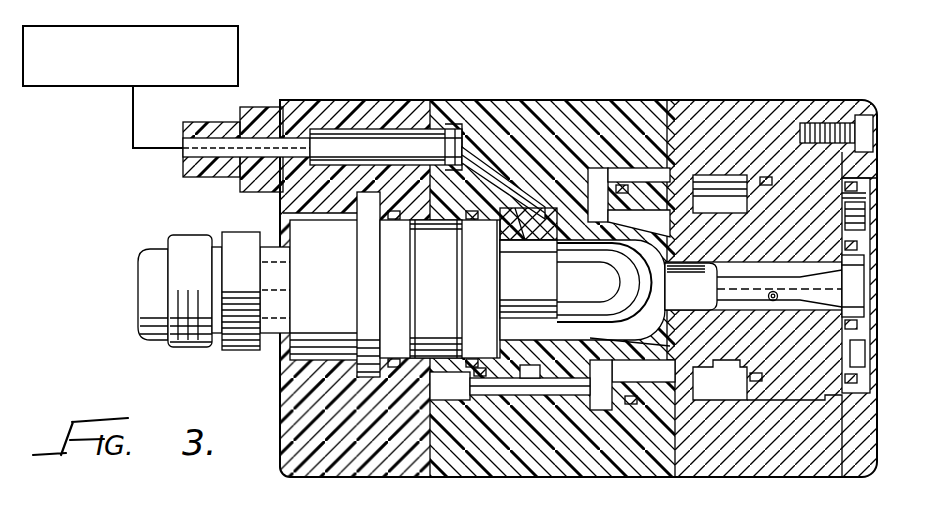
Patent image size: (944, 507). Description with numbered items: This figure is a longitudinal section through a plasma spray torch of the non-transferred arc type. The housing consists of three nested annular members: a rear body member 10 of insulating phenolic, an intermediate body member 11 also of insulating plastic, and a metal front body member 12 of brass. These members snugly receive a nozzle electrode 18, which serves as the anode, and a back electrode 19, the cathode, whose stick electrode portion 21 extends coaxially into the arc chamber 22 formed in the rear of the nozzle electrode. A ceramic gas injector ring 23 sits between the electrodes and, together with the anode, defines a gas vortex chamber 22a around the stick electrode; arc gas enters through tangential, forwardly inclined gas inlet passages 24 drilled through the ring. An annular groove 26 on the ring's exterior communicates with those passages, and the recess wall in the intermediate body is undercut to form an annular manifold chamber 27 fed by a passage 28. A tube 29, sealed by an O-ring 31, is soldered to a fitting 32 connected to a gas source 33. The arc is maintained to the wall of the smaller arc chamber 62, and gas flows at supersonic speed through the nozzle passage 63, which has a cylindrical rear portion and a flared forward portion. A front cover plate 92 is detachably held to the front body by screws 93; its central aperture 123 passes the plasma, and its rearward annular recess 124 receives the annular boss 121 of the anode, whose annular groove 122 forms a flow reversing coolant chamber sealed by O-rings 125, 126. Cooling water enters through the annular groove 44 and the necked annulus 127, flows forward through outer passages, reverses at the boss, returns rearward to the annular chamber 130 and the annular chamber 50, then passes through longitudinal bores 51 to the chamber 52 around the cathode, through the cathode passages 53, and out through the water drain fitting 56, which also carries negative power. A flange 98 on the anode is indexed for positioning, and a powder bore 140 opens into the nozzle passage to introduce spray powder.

The rear body member 10 is at (398, 100).
The intermediate body member 11 is at (580, 105).
The front body member 12 is at (725, 105).
The nozzle electrode 18 is at (805, 378).
The back electrode 19 is at (290, 345).
The stick electrode portion 21 is at (525, 288).
The arc chamber 22 is at (625, 255).
The gas vortex chamber 22a is at (505, 330).
The gas injector ring 23 is at (548, 207).
The gas inlet passages 24 is at (520, 238).
The annular groove 26 is at (512, 395).
The annular manifold chamber 27 is at (537, 382).
The passage 28 is at (488, 165).
The tube 29 is at (356, 129).
The O-ring 31 is at (447, 124).
The fitting 32 is at (210, 122).
The gas source 33 is at (238, 30).
The annular groove 44 is at (705, 178).
The annular chamber 50 is at (598, 410).
The longitudinal bores 51 is at (525, 395).
The chamber 52 is at (425, 383).
The piston flange 53 is at (453, 400).
The water drain fitting 56 is at (232, 232).
The arc chamber 62 is at (674, 293).
The nozzle passage 63 is at (757, 275).
The front cover plate 92 is at (872, 162).
The screws 93 is at (864, 130).
The flange 98 is at (838, 388).
The annular boss 121 is at (862, 200).
The annular groove 122 is at (865, 222).
The central aperture 123 is at (860, 312).
The annular recess 124 is at (865, 348).
The O-ring 125 is at (852, 190).
The O-ring 126 is at (857, 246).
The annulus 127 is at (728, 363).
The annular chamber 130 is at (640, 362).
The powder bore 140 is at (773, 301).